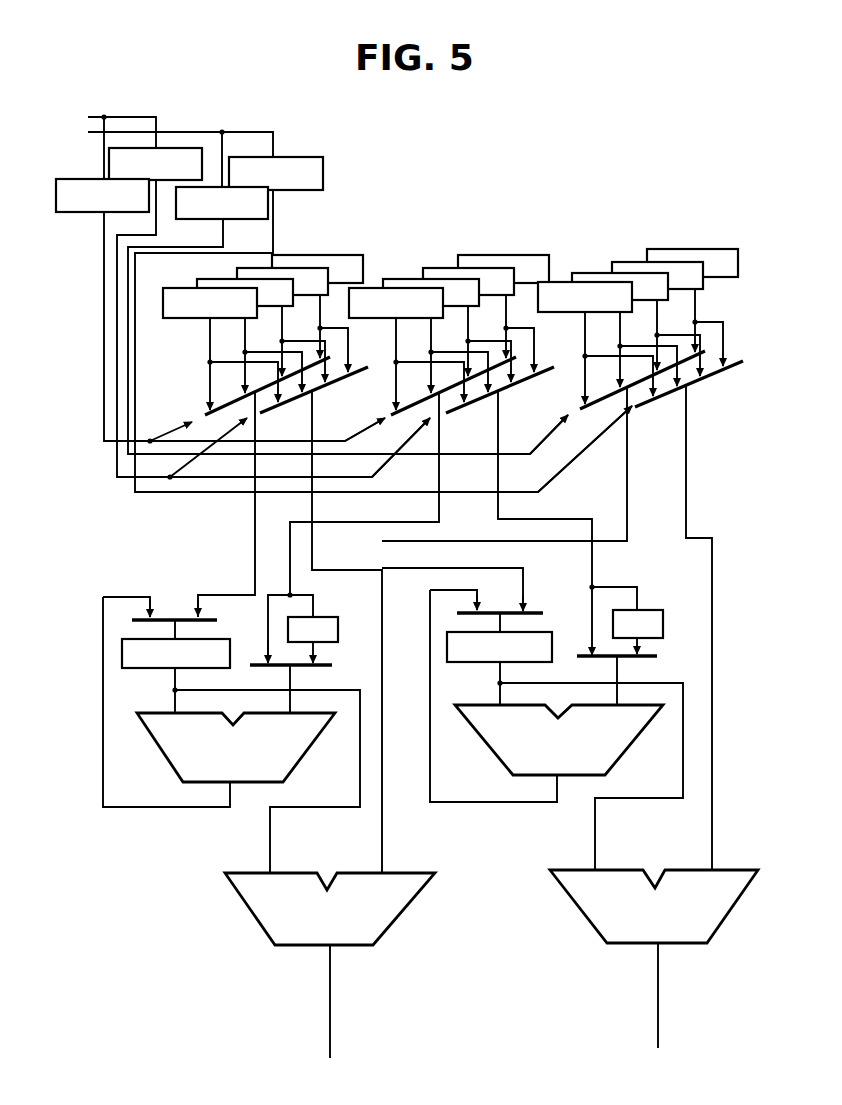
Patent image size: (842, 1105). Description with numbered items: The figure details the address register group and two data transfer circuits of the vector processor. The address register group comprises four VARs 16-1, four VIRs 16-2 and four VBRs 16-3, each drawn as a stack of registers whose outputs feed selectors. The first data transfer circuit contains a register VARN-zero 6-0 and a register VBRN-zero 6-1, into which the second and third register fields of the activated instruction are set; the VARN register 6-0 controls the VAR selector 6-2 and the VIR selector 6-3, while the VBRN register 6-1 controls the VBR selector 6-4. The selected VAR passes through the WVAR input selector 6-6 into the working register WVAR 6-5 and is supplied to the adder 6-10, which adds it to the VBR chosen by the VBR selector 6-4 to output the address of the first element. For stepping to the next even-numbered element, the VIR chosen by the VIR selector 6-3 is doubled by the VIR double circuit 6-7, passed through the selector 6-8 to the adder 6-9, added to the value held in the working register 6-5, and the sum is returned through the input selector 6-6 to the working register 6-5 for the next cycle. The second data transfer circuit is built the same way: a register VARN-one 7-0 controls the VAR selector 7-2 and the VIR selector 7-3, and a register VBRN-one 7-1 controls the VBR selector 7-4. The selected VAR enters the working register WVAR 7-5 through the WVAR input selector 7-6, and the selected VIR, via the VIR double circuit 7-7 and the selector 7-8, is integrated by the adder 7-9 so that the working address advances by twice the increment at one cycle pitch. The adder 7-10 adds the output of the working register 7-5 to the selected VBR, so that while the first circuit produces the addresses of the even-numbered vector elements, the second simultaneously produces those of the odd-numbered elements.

The register VARN (0) 6-0 is at (70, 179).
The register VARN (1) 7-0 is at (178, 148).
The register VBRN (0) 6-1 is at (212, 187).
The register VBRN (1) 7-1 is at (323, 176).
The VARs (0-3) 16-1 is at (263, 270).
The VIRs (0-3) 16-2 is at (449, 269).
The VBRs (0-3) 16-3 is at (638, 266).
The VAR selector 6-2 is at (205, 413).
The VAR selector 7-2 is at (290, 400).
The VIR selector 6-3 is at (392, 411).
The VIR selector 7-3 is at (472, 400).
The VBR selector 6-4 is at (580, 407).
The VBR selector 7-4 is at (662, 403).
The WVAR (0) 6-5 is at (152, 668).
The WVAR (0) input selector 6-6 is at (174, 617).
The VIR double circuit 6-7 is at (331, 617).
The selector 6-8 is at (322, 665).
The adder 6-9 is at (170, 756).
The adder 6-10 is at (257, 922).
The WVAR (1) 7-5 is at (479, 662).
The WVAR (1) input selector 7-6 is at (536, 612).
The VIR double circuit 7-7 is at (655, 610).
The selector 7-8 is at (652, 656).
The adder 7-9 is at (500, 760).
The adder 7-10 is at (586, 921).